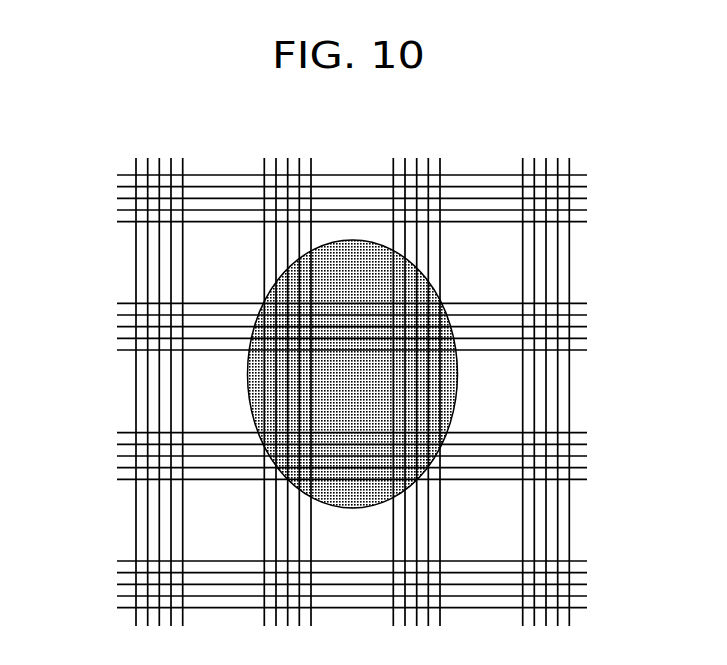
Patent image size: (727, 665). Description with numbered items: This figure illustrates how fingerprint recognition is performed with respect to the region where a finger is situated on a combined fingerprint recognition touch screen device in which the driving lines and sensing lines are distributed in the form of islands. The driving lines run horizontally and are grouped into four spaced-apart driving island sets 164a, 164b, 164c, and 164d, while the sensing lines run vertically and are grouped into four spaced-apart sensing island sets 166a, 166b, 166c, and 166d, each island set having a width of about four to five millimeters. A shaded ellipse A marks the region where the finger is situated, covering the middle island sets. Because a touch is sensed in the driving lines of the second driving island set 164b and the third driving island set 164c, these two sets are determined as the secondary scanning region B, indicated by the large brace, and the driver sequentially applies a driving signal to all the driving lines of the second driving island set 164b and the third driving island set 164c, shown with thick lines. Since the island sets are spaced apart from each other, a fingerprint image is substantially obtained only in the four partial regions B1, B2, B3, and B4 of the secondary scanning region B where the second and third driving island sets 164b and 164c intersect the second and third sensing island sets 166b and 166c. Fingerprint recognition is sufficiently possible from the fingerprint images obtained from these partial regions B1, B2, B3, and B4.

The first sensing island set 166a is at (183, 150).
The second sensing island set 166b is at (311, 150).
The third sensing island set 166c is at (440, 150).
The fourth sensing island set 166d is at (569, 150).
The first driving island set 164a is at (597, 175).
The second driving island set 164b is at (597, 303).
The third driving island set 164c is at (597, 433).
The fourth driving island set 164d is at (597, 561).
The secondary scanning region B is at (368, 391).
The partial region B1 is at (256, 293).
The partial region B2 is at (452, 295).
The partial region B3 is at (256, 488).
The partial region B4 is at (445, 486).
The touch/contact area (shaded elliptical region) A is at (459, 377).